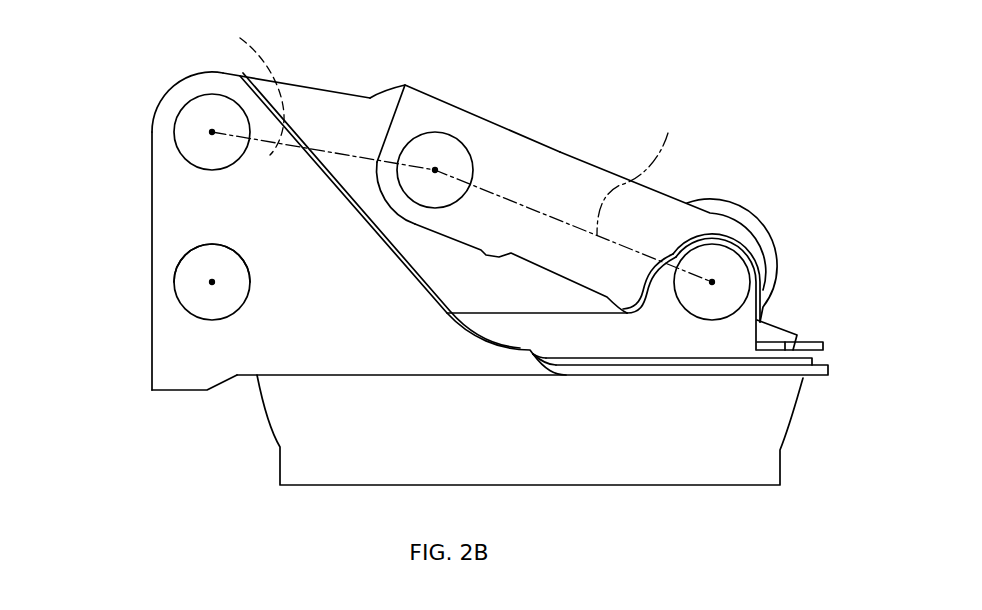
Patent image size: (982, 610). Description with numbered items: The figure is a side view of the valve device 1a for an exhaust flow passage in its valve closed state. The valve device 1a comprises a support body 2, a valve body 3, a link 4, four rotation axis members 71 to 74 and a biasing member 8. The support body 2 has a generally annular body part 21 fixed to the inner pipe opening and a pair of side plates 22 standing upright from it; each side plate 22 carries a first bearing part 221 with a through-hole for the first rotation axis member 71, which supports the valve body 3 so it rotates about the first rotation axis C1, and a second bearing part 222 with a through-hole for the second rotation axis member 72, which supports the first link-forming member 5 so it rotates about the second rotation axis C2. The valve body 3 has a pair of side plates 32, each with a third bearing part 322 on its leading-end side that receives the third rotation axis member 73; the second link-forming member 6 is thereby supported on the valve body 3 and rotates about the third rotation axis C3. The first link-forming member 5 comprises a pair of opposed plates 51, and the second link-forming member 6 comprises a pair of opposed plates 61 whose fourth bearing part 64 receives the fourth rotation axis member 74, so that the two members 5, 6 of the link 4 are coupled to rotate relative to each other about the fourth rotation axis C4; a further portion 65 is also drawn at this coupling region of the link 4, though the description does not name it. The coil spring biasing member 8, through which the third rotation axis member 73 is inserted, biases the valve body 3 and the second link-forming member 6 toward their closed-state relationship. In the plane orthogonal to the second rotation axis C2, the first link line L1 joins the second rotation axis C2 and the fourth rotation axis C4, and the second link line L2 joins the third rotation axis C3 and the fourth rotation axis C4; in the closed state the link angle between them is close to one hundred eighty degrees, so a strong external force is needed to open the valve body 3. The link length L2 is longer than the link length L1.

The valve device 1a is at (739, 164).
The support body 2 is at (264, 455).
The valve body 3 is at (581, 302).
The link 4 is at (513, 122).
The first link-forming member 5 is at (323, 85).
The second link-forming member 6 is at (571, 143).
The biasing member 8 is at (747, 200).
The body part 21 is at (760, 463).
The side plate 22 is at (185, 366).
The side plate 32 is at (605, 345).
The opposed plate 51 is at (362, 225).
The opposed plate 61 is at (553, 245).
The fourth bearing part 64 is at (445, 140).
The hook portion 65 is at (423, 92).
The first rotation axis member 71 is at (197, 295).
The second rotation axis member 72 is at (193, 138).
The third rotation axis member 73 is at (737, 273).
The fourth rotation axis member 74 is at (439, 155).
The first bearing part 221 is at (188, 252).
The second bearing part 222 is at (188, 103).
The third bearing part 322 is at (757, 318).
The first rotation axis C1 is at (212, 282).
The second rotation axis C2 is at (212, 132).
The third rotation axis C3 is at (712, 282).
The fourth rotation axis C4 is at (435, 170).
The first link line L1 is at (460, 146).
The second link line L2 is at (639, 172).